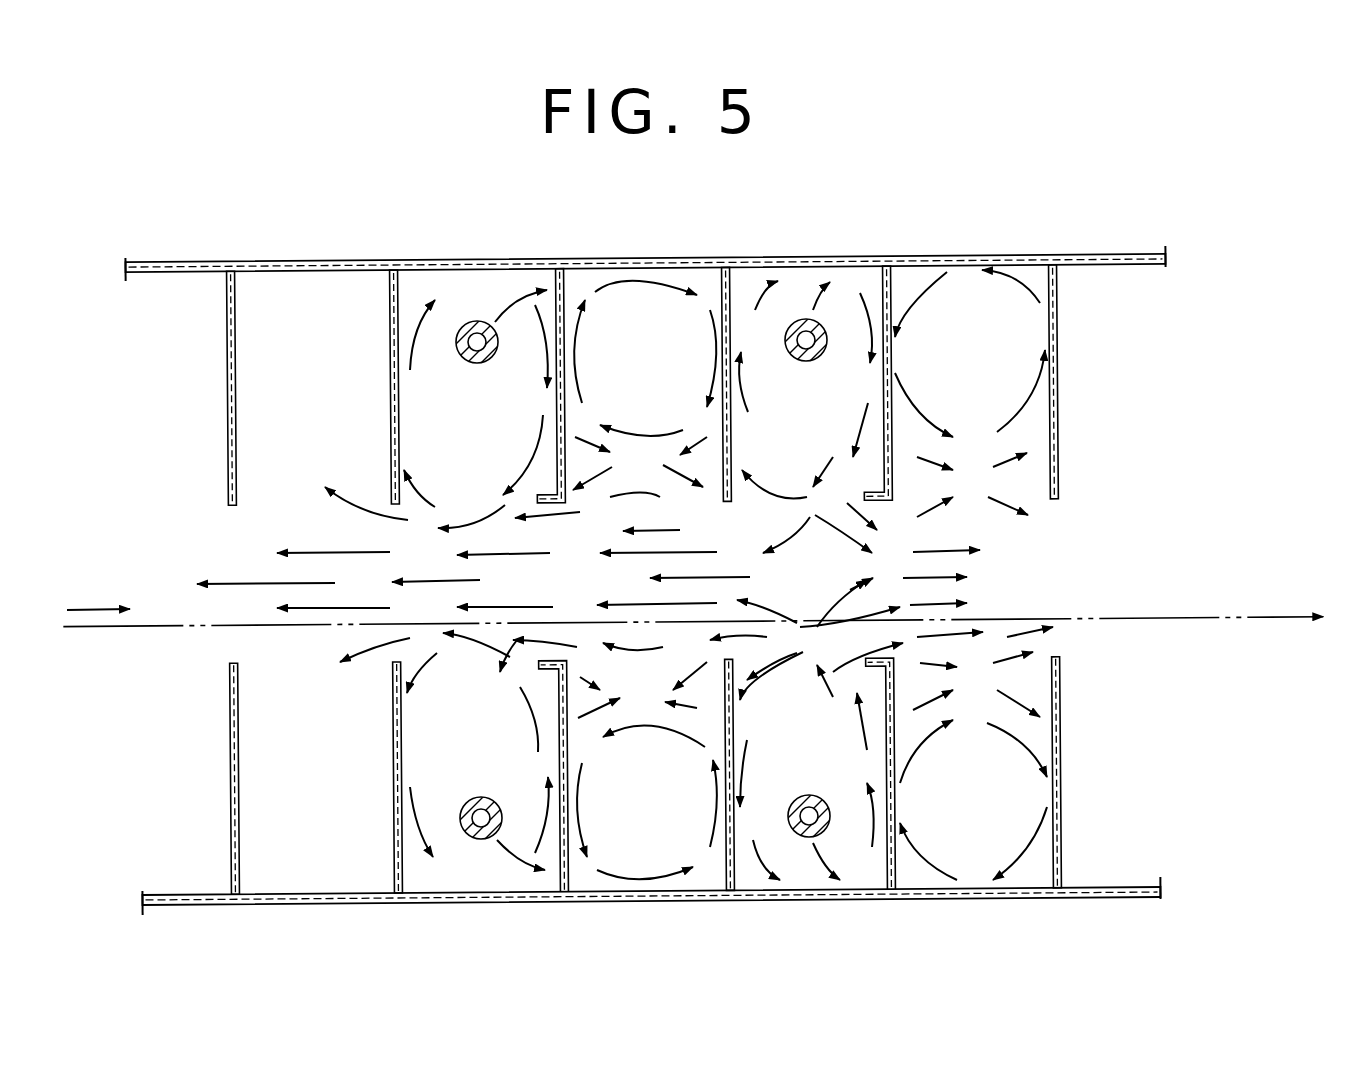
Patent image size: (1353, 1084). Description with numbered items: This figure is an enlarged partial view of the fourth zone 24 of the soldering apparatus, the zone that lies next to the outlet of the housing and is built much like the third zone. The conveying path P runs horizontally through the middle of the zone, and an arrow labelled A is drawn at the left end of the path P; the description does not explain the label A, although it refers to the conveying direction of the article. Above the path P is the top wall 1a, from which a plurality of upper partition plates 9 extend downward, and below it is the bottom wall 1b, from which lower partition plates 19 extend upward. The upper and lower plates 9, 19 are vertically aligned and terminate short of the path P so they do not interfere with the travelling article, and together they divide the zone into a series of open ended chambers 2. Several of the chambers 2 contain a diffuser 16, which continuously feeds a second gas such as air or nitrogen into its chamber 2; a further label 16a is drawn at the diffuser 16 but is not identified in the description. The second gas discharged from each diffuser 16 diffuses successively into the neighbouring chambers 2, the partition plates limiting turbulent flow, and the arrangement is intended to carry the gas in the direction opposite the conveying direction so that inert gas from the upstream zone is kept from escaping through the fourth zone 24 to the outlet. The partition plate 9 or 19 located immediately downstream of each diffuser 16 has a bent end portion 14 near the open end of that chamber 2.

The top wall 1a is at (437, 259).
The bottom wall 1b is at (855, 903).
The chamber 2 is at (625, 323).
The upper partition plate 9 is at (392, 305).
The bent end portion 14 is at (549, 505).
The diffuser 16 is at (469, 364).
The heater tube surface 16a is at (493, 327).
The lower partition plate 19 is at (238, 832).
The fourth zone 24 is at (1027, 565).
The path P is at (1210, 622).
The conveying direction A is at (84, 609).